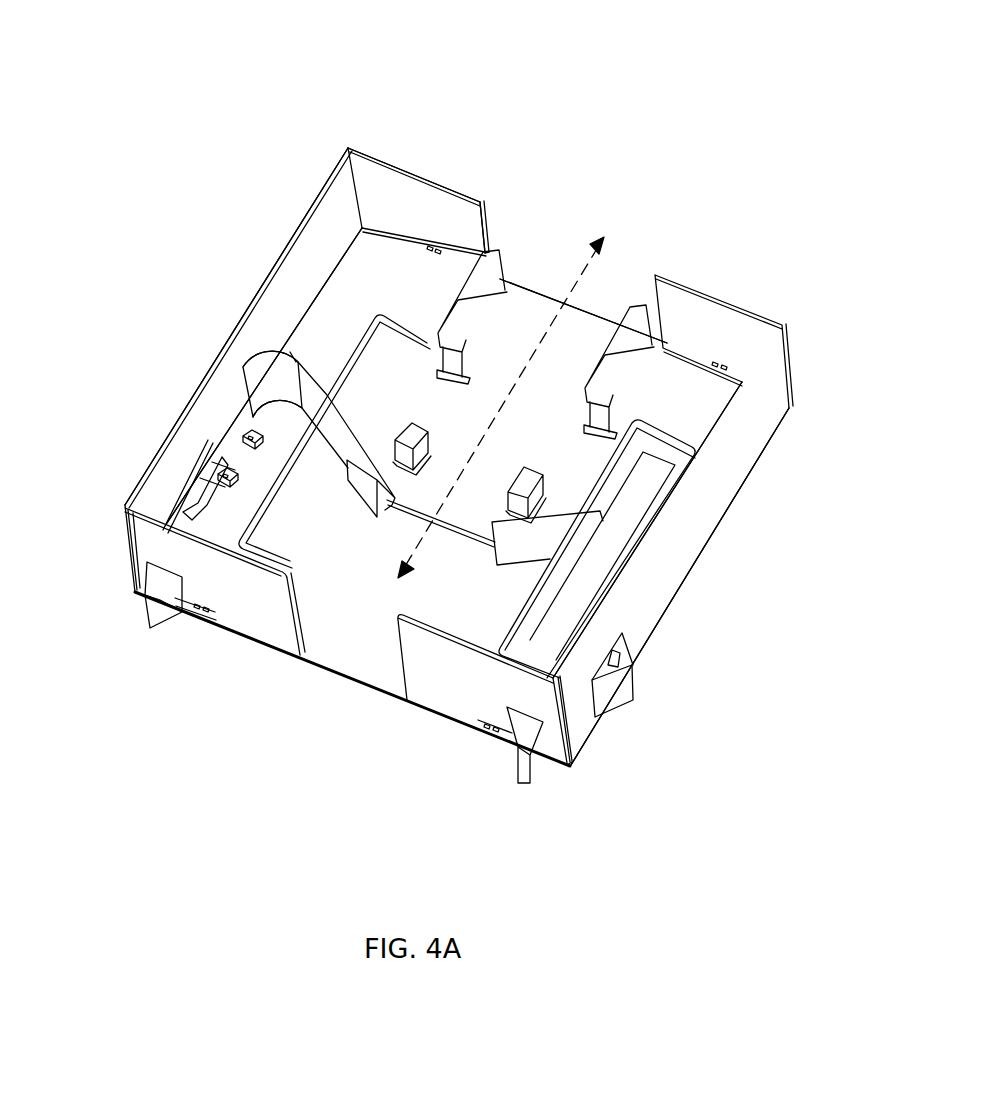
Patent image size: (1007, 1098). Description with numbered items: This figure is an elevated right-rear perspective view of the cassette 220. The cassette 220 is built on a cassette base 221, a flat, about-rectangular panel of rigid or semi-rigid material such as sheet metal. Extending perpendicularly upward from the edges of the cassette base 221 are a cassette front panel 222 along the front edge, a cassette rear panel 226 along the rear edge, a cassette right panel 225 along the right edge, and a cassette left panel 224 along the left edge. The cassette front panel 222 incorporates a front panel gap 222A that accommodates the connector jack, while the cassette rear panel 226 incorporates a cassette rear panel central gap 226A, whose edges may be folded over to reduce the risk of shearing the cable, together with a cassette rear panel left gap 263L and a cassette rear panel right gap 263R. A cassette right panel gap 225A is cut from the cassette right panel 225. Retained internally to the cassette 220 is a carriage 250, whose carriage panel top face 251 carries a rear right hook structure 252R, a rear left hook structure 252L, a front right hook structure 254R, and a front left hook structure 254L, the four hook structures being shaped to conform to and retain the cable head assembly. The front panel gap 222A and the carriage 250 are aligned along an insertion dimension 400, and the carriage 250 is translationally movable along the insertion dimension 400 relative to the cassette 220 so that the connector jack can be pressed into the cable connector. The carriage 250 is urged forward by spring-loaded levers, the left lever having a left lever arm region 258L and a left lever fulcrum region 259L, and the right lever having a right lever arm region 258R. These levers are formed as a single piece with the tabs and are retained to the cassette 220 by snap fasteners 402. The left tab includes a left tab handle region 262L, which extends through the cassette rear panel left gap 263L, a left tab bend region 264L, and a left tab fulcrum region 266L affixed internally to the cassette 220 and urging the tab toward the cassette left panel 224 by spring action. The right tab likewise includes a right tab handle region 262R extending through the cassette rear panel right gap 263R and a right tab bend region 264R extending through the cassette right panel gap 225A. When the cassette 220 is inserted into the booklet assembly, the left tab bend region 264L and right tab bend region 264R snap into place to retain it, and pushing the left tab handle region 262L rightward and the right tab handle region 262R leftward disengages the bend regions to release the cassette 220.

The cassette 220 is at (205, 122).
The cassette base 221 is at (370, 268).
The cassette front panel 222 is at (402, 203).
The front panel gap 222A is at (489, 197).
The cassette left panel 224 is at (328, 200).
The cassette right panel 225 is at (781, 386).
The cassette right panel gap 225A is at (623, 633).
The cassette rear panel 226 is at (232, 615).
The cassette rear panel central gap 226A is at (333, 672).
The carriage 250 is at (612, 300).
The carriage panel top face 251 is at (553, 500).
The rear left hook structure 252L is at (420, 432).
The rear right hook structure 252R is at (547, 483).
The front left hook structure 254L is at (488, 268).
The front right hook structure 254R is at (635, 340).
The left lever arm region 258L is at (327, 397).
The right lever arm region 258R is at (527, 543).
The left lever fulcrum region 259L is at (280, 380).
The left tab handle region 262L is at (143, 628).
The right tab handle region 262R is at (527, 783).
The cassette rear panel left gap 263L is at (184, 606).
The cassette rear panel right gap 263R is at (513, 713).
The left tab bend region 264L is at (193, 495).
The right tab bend region 264R is at (627, 685).
The left tab fulcrum region 266L is at (212, 462).
The insertion dimension 400 is at (584, 255).
The snap fasteners 402 is at (250, 432).